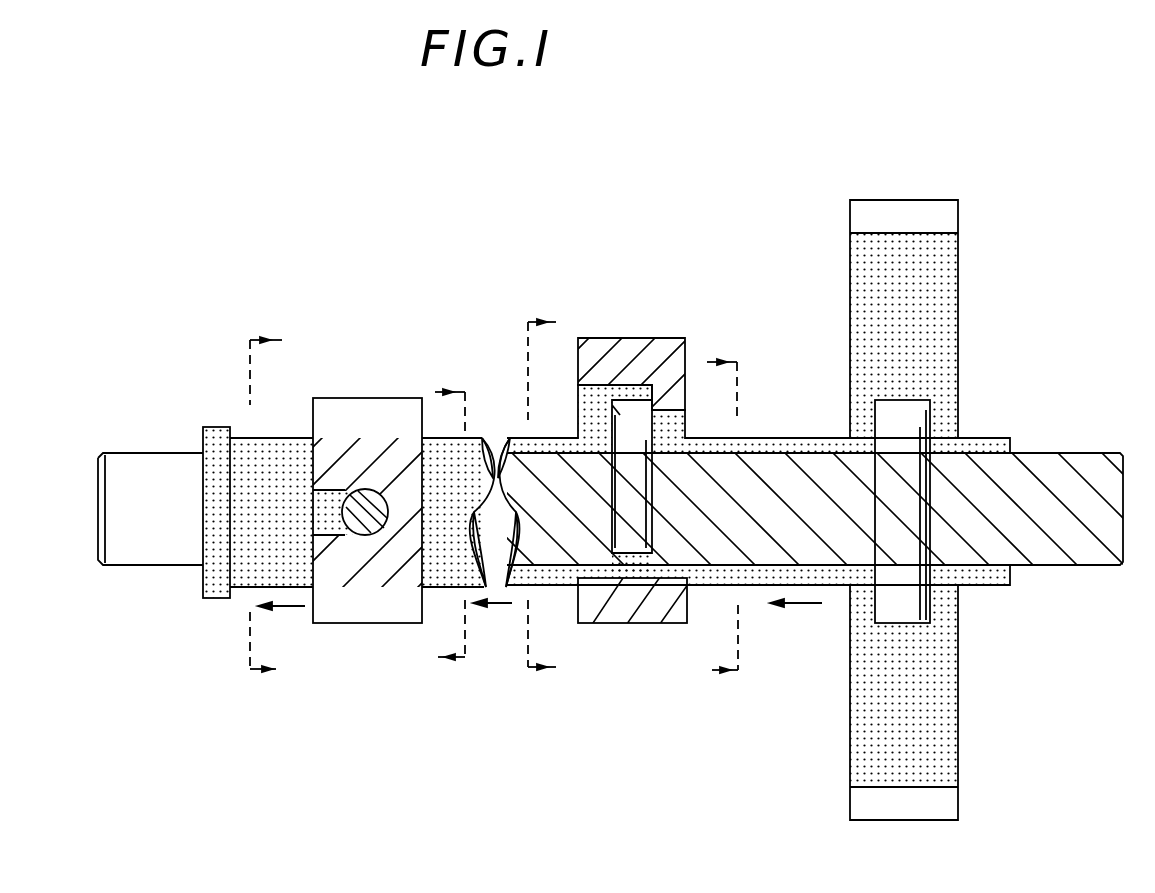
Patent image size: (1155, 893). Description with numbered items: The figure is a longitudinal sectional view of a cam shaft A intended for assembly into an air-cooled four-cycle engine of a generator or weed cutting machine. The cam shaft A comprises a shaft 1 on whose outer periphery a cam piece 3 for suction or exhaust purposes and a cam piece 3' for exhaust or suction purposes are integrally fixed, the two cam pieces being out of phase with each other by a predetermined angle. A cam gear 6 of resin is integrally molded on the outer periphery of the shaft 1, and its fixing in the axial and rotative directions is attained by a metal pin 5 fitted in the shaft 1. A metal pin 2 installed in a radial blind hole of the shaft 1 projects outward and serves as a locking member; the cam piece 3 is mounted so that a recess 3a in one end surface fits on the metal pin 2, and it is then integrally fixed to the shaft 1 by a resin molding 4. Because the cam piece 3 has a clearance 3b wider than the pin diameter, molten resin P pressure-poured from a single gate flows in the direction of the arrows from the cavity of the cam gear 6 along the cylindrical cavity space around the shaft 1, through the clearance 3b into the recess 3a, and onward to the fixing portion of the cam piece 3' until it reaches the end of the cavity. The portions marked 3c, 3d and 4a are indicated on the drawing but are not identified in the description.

The shaft 1 is at (131, 452).
The metal pin 2 is at (357, 494).
The cam piece 3 is at (624, 443).
The cam piece 3' is at (370, 461).
The recess 3a is at (725, 516).
The clearance 3b is at (564, 490).
The section position c 3c is at (454, 525).
The section position d 3d is at (288, 510).
The resin molding 4 is at (578, 417).
The flange / sleeve portion 4a is at (243, 438).
The metal pin 5 is at (913, 407).
The cam gear 6 is at (958, 270).
The cam shaft A is at (384, 284).
The molten resin P is at (540, 626).